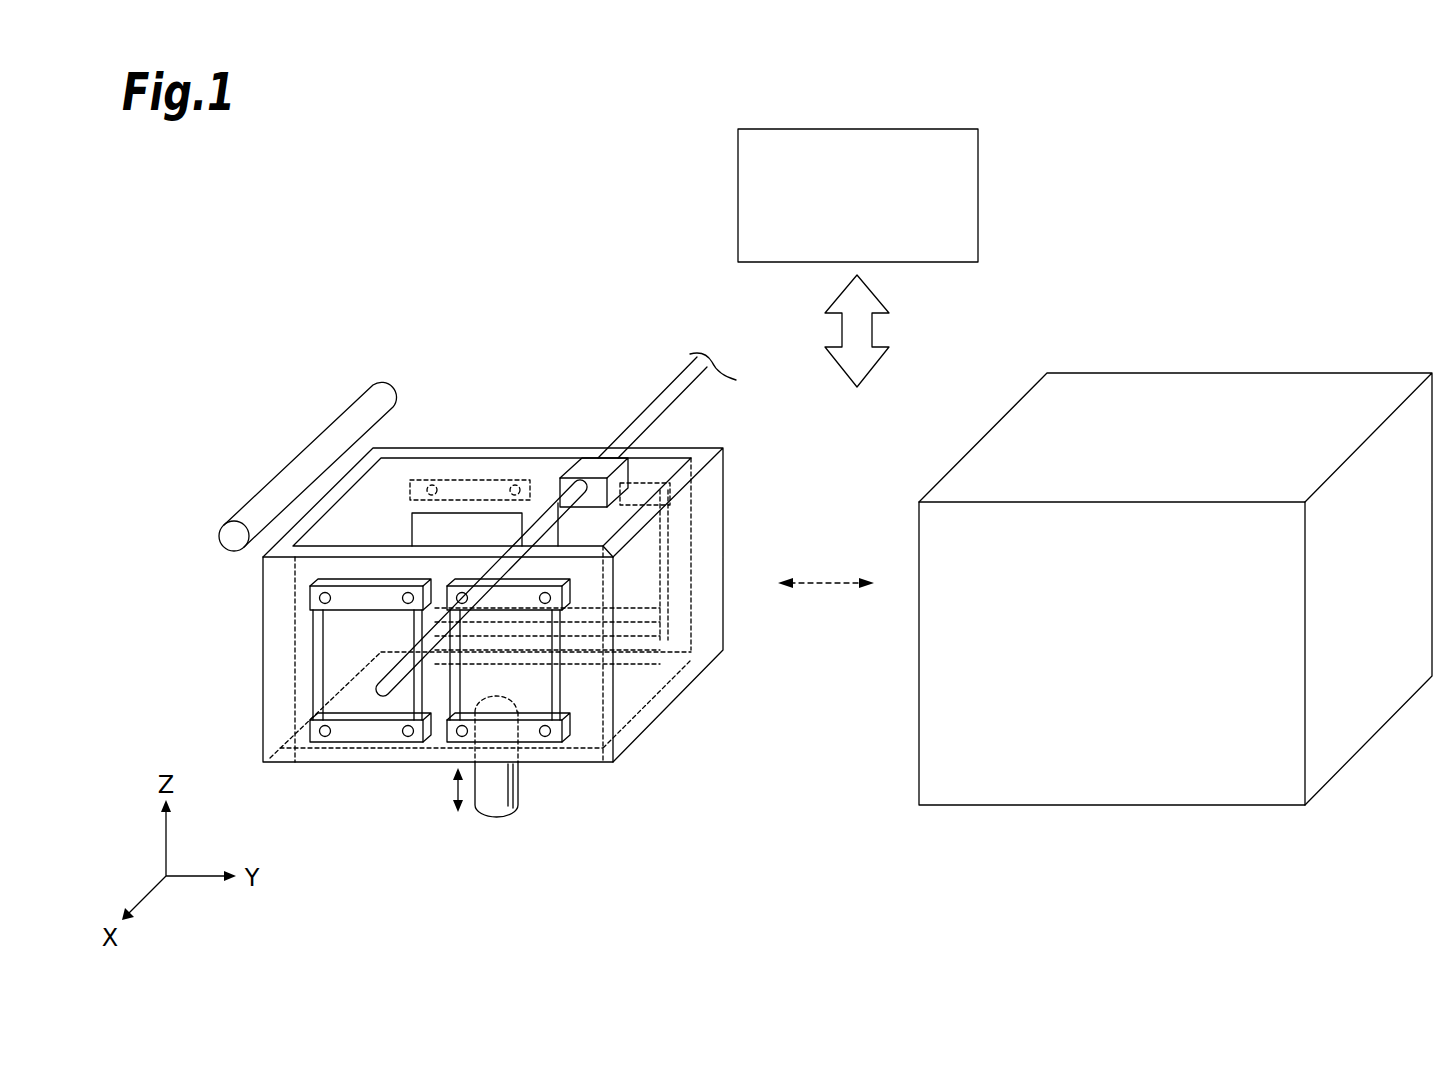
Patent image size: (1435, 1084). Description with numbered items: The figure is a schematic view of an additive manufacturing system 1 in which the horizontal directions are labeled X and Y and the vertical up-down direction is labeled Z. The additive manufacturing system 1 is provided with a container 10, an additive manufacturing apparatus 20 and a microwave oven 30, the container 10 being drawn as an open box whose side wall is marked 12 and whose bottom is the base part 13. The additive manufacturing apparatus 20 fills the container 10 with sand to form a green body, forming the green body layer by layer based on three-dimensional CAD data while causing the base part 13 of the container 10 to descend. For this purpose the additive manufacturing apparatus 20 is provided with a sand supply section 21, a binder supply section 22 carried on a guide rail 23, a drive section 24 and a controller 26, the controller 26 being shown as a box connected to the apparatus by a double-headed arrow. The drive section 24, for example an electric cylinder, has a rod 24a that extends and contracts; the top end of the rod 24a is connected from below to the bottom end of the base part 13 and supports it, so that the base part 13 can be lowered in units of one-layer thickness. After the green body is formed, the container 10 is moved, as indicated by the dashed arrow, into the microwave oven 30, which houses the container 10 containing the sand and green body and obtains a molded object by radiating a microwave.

The additive manufacturing system 1 is at (1200, 119).
The container 10 is at (771, 454).
The housing 12 is at (728, 536).
The base part 13 is at (633, 693).
The additive manufacturing apparatus 20 is at (433, 251).
The sand supply section 21 is at (322, 433).
The binder supply section 22 is at (590, 470).
The guide rail 23 is at (655, 411).
The drive section 24 is at (534, 812).
The rod 24a is at (521, 785).
The controller 26 is at (979, 183).
The microwave oven 30 is at (1172, 378).